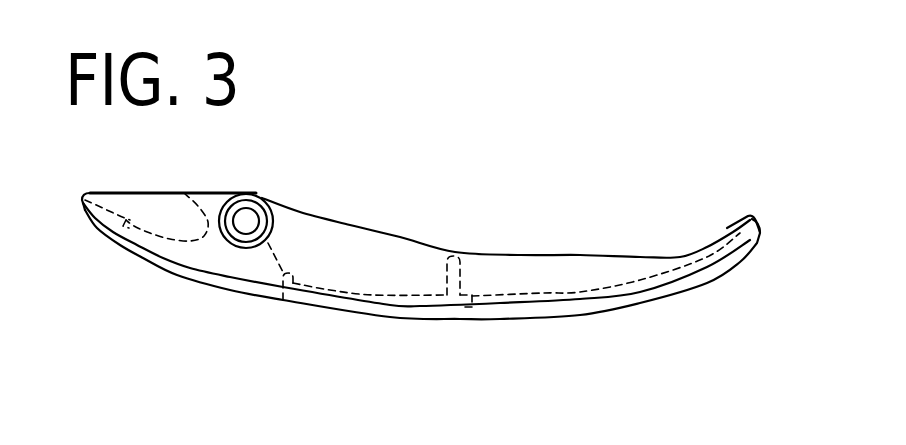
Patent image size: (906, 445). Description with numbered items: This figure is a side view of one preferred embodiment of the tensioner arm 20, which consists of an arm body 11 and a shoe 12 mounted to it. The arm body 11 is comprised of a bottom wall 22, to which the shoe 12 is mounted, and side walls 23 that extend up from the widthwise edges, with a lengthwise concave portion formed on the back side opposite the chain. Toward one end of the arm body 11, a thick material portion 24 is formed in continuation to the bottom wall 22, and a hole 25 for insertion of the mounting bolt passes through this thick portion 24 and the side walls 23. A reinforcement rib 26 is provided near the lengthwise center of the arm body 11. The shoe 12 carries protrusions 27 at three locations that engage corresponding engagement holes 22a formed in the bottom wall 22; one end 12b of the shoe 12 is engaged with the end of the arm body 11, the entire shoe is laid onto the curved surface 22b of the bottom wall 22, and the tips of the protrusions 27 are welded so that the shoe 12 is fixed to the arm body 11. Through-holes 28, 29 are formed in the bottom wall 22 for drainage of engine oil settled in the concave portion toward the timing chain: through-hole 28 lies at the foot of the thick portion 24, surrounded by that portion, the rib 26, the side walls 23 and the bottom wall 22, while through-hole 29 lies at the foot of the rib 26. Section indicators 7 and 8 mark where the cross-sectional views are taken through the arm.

The section line 7- 7 is at (292, 207).
The section line 8- 8 is at (597, 253).
The arm body 11 is at (400, 237).
The shoe 12 is at (697, 288).
The one end of the shoe 12b is at (745, 218).
The tensioner arm 20 is at (475, 182).
The bottom wall 22 is at (542, 293).
The engagement holes 22a is at (120, 242).
The curved surface 22b is at (220, 277).
The side walls 23 is at (357, 248).
The thick material portion 24 is at (184, 193).
The hole 25 is at (247, 217).
The reinforcement rib 26 is at (468, 278).
The protrusions 27 is at (137, 218).
The through-hole 28 is at (283, 300).
The through-hole 29 is at (462, 318).